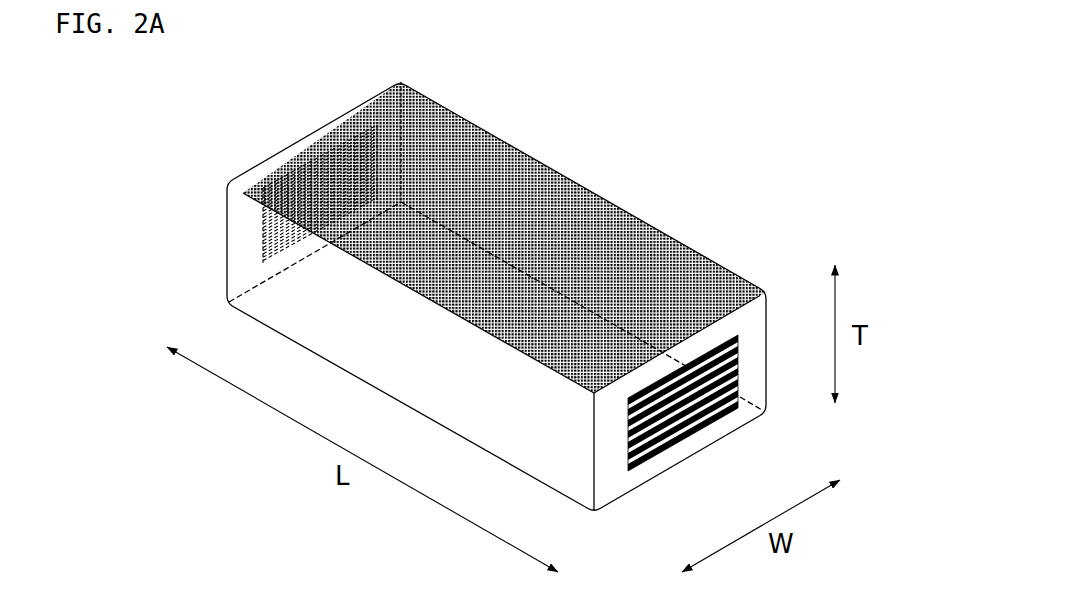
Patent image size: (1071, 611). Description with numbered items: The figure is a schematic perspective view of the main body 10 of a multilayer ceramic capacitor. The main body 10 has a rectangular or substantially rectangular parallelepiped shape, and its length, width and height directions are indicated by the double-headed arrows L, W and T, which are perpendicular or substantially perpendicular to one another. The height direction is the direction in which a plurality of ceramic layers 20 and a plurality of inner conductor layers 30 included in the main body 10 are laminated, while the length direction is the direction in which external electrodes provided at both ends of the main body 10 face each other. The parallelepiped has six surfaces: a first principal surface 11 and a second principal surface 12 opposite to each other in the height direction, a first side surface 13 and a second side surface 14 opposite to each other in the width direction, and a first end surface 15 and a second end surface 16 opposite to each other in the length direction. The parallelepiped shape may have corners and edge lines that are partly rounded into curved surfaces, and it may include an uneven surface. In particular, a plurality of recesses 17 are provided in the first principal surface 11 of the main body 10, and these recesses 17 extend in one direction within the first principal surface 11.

The main body 10 is at (659, 176).
The first principal surface 11 is at (518, 192).
The second principal surface 12 is at (355, 342).
The first side surface 13 is at (465, 410).
The second side surface 14 is at (707, 300).
The first end surface 15 is at (243, 228).
The second end surface 16 is at (758, 370).
The recesses 17 is at (430, 132).
The ceramic layers 20 is at (663, 453).
The inner conductor layers 30 is at (687, 440).